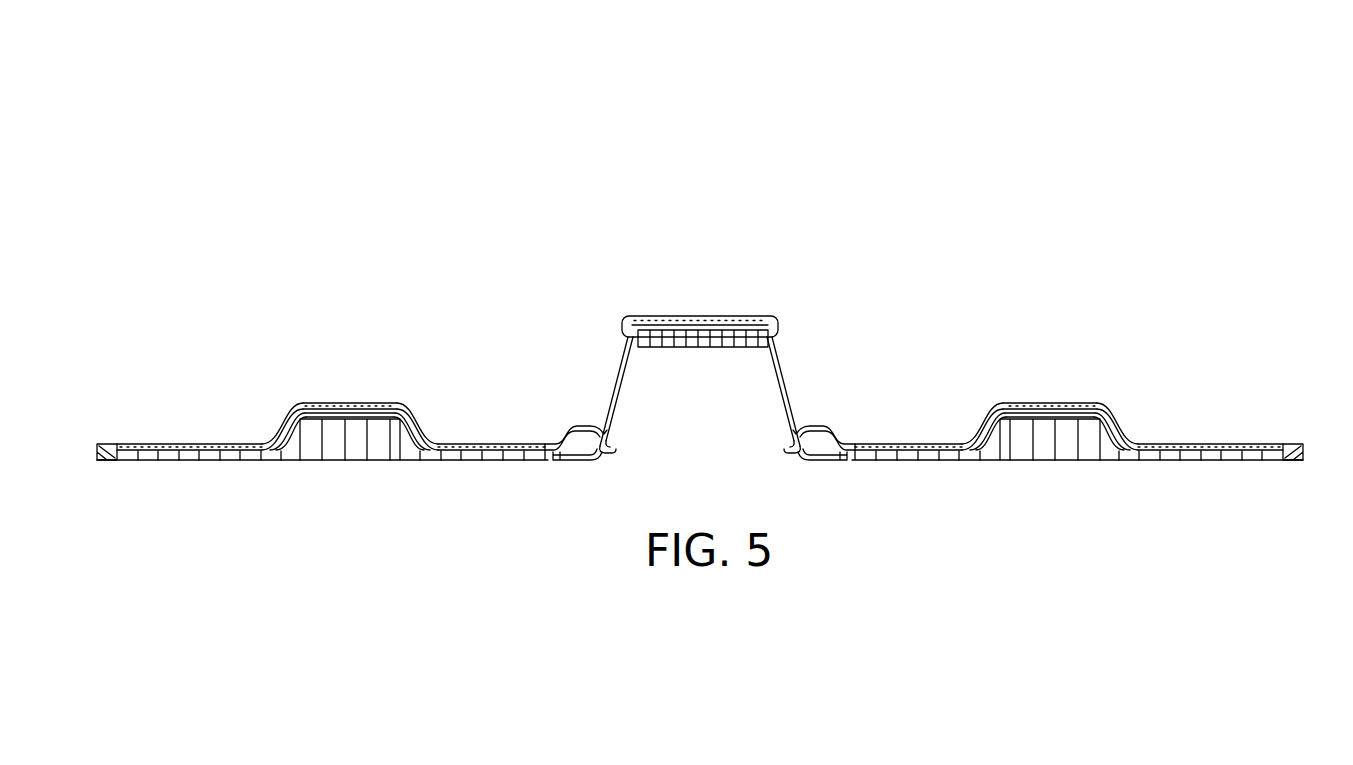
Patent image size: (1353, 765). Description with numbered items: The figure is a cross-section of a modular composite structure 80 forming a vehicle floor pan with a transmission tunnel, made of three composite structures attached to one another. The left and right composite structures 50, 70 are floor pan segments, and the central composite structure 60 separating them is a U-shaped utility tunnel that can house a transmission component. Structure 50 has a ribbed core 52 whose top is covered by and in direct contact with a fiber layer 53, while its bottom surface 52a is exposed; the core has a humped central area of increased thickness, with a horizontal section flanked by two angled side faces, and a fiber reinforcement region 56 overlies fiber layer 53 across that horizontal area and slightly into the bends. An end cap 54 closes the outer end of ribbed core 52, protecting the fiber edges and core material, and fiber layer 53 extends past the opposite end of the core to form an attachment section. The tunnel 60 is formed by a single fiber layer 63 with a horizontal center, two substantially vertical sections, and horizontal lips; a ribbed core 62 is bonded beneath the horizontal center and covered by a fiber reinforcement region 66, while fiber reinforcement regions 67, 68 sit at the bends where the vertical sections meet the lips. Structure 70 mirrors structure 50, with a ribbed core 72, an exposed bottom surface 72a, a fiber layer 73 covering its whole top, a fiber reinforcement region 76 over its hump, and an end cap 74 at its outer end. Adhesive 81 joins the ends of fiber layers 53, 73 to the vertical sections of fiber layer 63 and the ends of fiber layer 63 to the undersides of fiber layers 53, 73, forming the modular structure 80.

The modular composite structure 80 is at (1088, 142).
The composite structure 50 is at (292, 362).
The ribbed core 52 is at (312, 436).
The bottom surface 52a is at (333, 462).
The fiber layer 53 is at (447, 443).
The end cap 54 is at (101, 443).
The fiber reinforcement region 56 is at (398, 404).
The composite structure 60 is at (644, 250).
The ribbed core 62 is at (700, 348).
The fiber layer 63 is at (617, 370).
The fiber reinforcement region 66 is at (749, 313).
The fiber reinforcement region 67 is at (607, 452).
The fiber reinforcement region 68 is at (793, 452).
The composite structure 70 is at (996, 362).
The ribbed core 72 is at (1015, 436).
The bottom surface 72a is at (1040, 462).
The fiber layer 73 is at (1155, 443).
The end cap 74 is at (1305, 443).
The fiber reinforcement region 76 is at (1105, 404).
The adhesive 81 is at (603, 424).